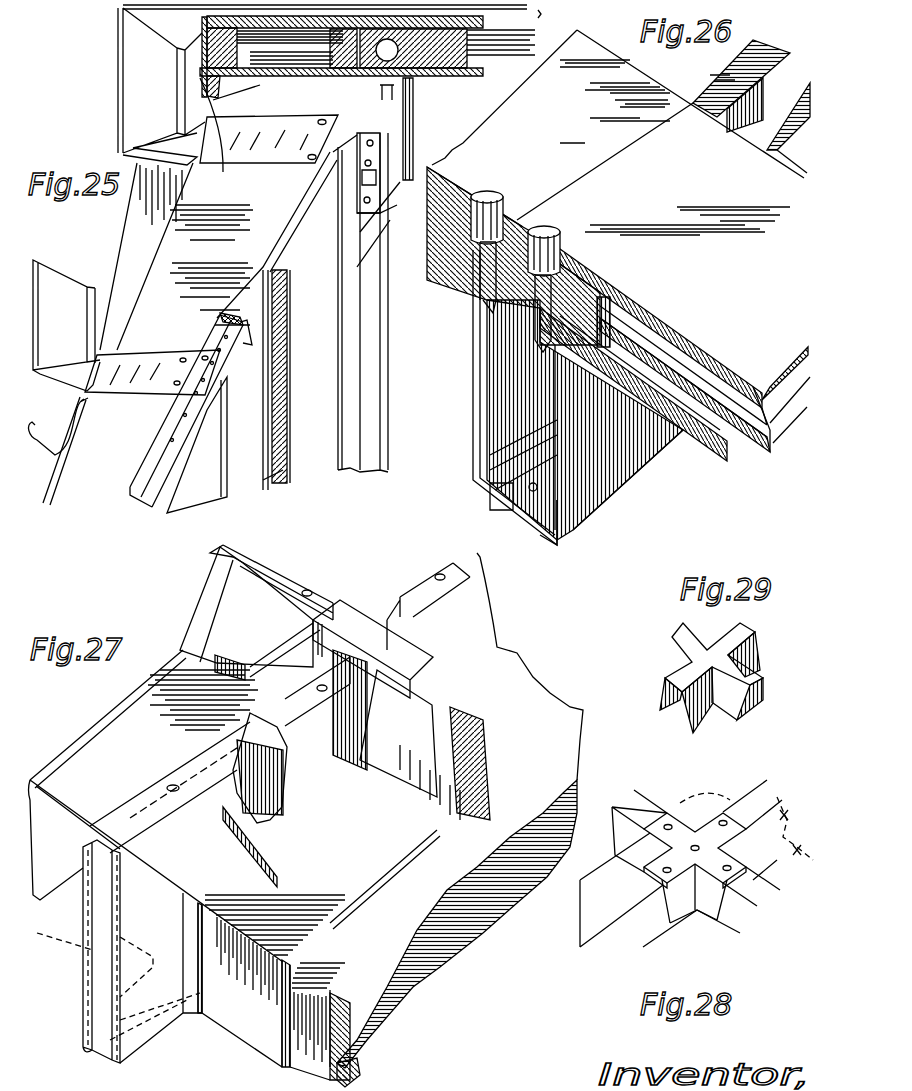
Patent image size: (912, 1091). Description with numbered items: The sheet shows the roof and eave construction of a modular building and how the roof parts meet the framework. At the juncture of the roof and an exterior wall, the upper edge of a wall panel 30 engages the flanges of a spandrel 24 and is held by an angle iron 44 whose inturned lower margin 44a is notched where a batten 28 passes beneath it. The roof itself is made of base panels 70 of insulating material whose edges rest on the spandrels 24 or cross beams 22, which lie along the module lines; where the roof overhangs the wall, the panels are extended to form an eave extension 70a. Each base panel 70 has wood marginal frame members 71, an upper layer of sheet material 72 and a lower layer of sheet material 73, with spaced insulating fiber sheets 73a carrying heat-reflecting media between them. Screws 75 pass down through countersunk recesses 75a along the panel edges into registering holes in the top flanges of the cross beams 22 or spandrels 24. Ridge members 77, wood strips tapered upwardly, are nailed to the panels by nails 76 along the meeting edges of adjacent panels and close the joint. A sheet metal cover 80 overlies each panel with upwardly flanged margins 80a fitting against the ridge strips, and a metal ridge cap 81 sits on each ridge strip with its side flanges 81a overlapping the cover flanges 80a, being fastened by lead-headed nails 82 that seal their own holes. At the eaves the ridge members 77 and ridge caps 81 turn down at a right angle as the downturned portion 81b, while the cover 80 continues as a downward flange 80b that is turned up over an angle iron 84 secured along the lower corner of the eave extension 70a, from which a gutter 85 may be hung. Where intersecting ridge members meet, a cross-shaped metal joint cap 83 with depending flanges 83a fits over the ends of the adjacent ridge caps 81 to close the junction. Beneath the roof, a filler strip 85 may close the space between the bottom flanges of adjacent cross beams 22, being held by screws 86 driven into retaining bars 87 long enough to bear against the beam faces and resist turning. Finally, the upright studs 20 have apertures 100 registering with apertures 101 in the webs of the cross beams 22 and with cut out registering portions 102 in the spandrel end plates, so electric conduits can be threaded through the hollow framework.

In FIG. 25, the upright stud 20 is at (378, 347).
In FIG. 26, the cross beam 22 is at (560, 473).
In FIG. 25, the spandrel 24 is at (403, 138).
In FIG. 25, the batten 28 is at (207, 457).
In FIG. 25, the wall panel 30 is at (283, 470).
In FIG. 25, the angle iron 44 is at (187, 327).
In FIG. 25, the inturned lower margin 44a is at (240, 358).
In FIG. 25, the base panel 70 is at (493, 63).
In FIG. 26, the base panel 70 is at (587, 43).
In FIG. 25, the eave extension 70a is at (183, 240).
In FIG. 26, the marginal frame member 71 is at (603, 283).
In FIG. 26, the upper layer of sheet material 72 is at (657, 322).
In FIG. 26, the lower layer of sheet material 73 is at (668, 448).
In FIG. 26, the fiber sheet 73a is at (753, 388).
In FIG. 25, the screw 75 is at (380, 97).
In FIG. 26, the screw 75 is at (507, 318).
In FIG. 26, the countersunk recess 75a is at (540, 226).
In FIG. 27, the nail 76 is at (490, 791).
In FIG. 27, the ridge member 77 is at (480, 753).
In FIG. 27, the sheet metal cover 80 is at (553, 700).
In FIG. 28, the sheet metal cover 80 is at (797, 828).
In FIG. 27, the upwardly flanged margin 80a is at (450, 734).
In FIG. 25, the downward flange 80b is at (222, 136).
In FIG. 27, the metal ridge cap 81 is at (137, 785).
In FIG. 28, the metal ridge cap 81 is at (797, 772).
In FIG. 27, the side flange of ridge cap 81a is at (217, 843).
In FIG. 28, the side flange of ridge cap 81a is at (750, 798).
In FIG. 25, the downturned ridge cap portion 81b is at (133, 103).
In FIG. 27, the downturned ridge cap portion 81b is at (97, 965).
In FIG. 27, the lead-headed nail 82 is at (172, 784).
In FIG. 29, the metal joint cap 83 is at (680, 630).
In FIG. 28, the metal joint cap 83 is at (675, 820).
In FIG. 29, the depending flange 83a is at (690, 722).
In FIG. 25, the angle iron 84 is at (213, 79).
In FIG. 27, the angle iron 84 is at (358, 1068).
In FIG. 25, the gutter 85 is at (30, 497).
In FIG. 26, the gutter 85 is at (520, 527).
In FIG. 26, the screw 86 is at (490, 497).
In FIG. 26, the retaining bar 87 is at (493, 467).
In FIG. 25, the aperture 100 is at (380, 170).
In FIG. 25, the aperture 101 is at (373, 182).
In FIG. 25, the cut out registering portion 102 is at (382, 238).